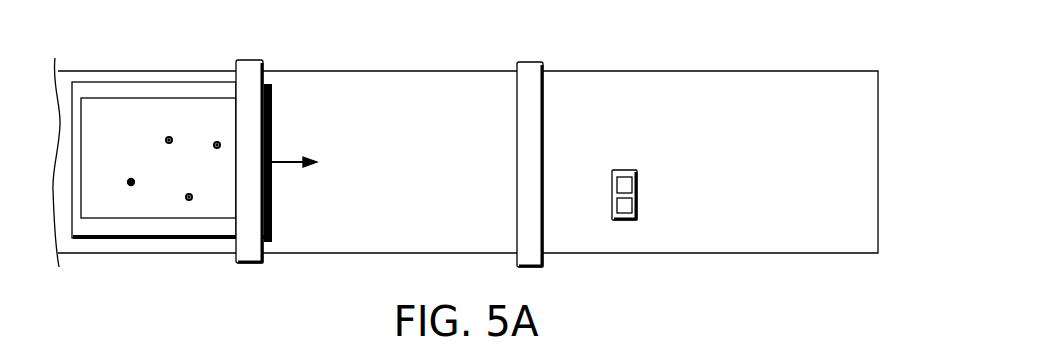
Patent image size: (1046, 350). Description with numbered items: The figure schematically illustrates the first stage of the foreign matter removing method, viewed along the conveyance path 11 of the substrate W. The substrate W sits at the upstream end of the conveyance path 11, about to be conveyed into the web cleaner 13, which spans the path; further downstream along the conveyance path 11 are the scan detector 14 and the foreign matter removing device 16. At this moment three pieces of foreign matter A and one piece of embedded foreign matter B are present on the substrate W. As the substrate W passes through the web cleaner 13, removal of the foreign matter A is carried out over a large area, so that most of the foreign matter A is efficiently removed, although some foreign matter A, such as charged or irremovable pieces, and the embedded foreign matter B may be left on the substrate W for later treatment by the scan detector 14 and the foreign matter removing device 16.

The conveyance path 11 is at (724, 72).
The web cleaner 13 is at (250, 60).
The scan detector 14 is at (526, 62).
The foreign matter removing device 16 is at (619, 176).
The substrate W is at (108, 98).
The foreign matter A is at (216, 142).
The embedded foreign matter B is at (131, 186).